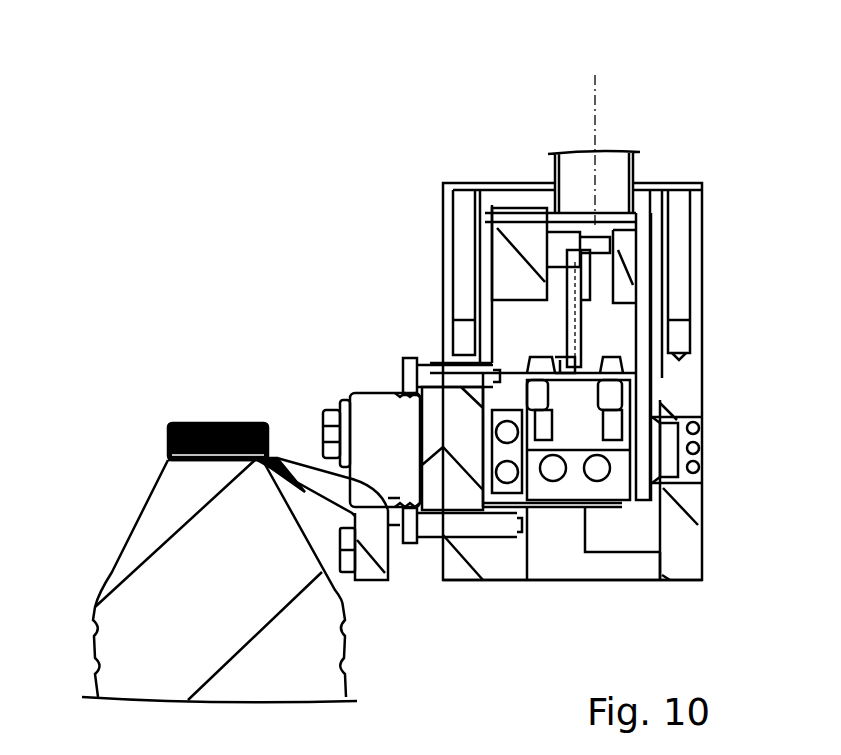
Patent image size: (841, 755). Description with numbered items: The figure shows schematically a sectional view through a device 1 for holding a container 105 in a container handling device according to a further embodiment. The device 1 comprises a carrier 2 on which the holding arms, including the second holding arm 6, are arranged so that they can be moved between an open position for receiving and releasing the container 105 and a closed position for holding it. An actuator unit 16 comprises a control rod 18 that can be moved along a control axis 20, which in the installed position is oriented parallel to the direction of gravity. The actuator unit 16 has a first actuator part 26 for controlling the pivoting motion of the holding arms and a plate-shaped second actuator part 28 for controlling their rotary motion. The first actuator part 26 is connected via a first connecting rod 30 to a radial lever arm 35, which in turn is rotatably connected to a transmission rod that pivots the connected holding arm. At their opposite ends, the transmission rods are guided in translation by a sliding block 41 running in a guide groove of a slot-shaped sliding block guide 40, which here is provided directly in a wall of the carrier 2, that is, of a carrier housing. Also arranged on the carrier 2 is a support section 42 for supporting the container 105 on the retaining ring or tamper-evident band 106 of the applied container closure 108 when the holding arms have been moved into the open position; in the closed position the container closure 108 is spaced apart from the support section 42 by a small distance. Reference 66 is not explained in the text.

The device 1 is at (366, 143).
The carrier 2 is at (687, 557).
The second holding arm 6 is at (318, 458).
The actuator unit 16 is at (692, 86).
The control rod 18 is at (617, 170).
The control axis 20 is at (597, 112).
The first actuator part 26 is at (557, 280).
The second actuator part 28 is at (643, 287).
The first connecting rod 30 is at (562, 318).
The radial lever arm 35 is at (546, 360).
The sliding block guide 40 is at (724, 447).
The sliding block 41 is at (640, 428).
The support section 42 is at (372, 575).
The hose connector 66 is at (284, 458).
The container 105 is at (160, 517).
The tamper-evident band 106 is at (168, 453).
The container closure 108 is at (197, 424).